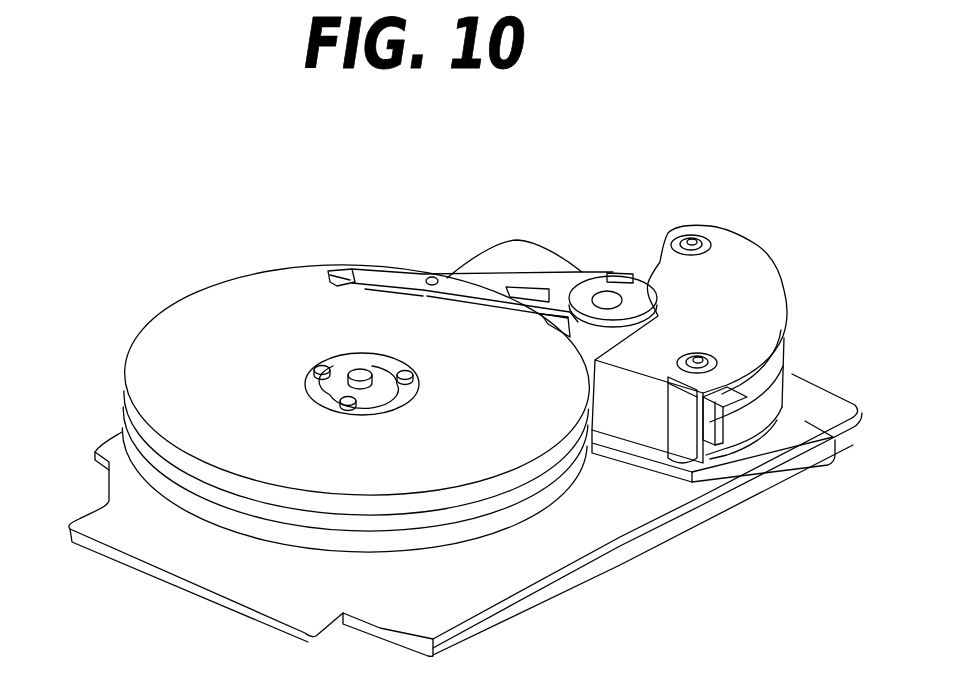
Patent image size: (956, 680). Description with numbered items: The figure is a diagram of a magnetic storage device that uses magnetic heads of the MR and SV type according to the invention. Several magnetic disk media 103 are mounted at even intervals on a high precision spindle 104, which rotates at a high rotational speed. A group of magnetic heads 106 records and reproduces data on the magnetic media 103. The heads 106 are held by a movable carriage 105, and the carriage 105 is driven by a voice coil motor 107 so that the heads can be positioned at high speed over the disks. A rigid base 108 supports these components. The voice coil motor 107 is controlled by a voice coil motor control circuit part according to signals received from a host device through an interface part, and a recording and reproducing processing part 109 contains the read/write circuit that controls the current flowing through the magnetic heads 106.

The magnetic disk media 103 is at (218, 302).
The spindle 104 is at (306, 388).
The movable carriage 105 is at (518, 280).
The magnetic heads 106 is at (343, 266).
The voice coil motor 107 is at (745, 255).
The rigid base 108 is at (797, 396).
The recording and reproducing processing part 109 is at (562, 583).